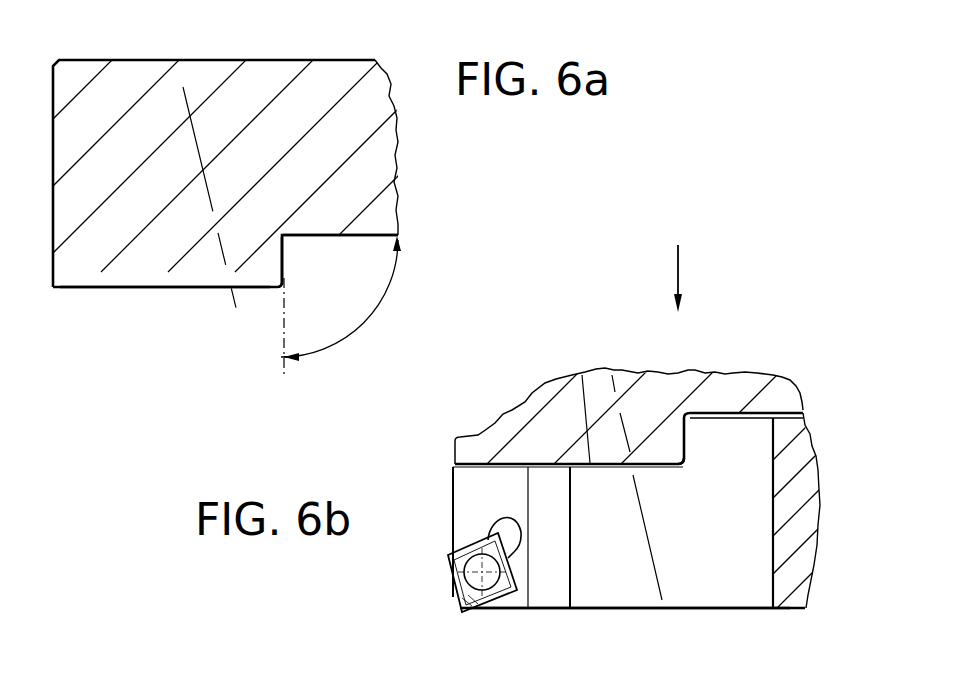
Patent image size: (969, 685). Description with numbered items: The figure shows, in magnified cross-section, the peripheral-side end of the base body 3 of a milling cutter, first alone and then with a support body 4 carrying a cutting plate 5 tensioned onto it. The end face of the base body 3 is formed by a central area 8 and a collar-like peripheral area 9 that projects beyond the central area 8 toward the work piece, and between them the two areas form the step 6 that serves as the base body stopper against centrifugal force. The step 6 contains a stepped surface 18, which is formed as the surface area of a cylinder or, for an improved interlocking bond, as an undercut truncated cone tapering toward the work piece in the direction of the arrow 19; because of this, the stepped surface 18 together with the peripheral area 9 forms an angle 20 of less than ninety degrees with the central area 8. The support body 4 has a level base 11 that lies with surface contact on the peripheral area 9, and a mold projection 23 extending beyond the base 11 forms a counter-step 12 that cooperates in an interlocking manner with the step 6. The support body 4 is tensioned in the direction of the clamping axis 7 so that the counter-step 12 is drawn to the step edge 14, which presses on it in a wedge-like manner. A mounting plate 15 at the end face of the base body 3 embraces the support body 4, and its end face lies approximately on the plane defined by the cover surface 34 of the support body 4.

In FIG. 6a, the base body 3 is at (268, 93).
In FIG. 6b, the base body 3 is at (735, 397).
In FIG. 6b, the support body 4 is at (735, 577).
In FIG. 6b, the cutting plate 5 is at (448, 556).
In FIG. 6a, the step 6 is at (282, 275).
In FIG. 6a, the clamping axis 7 is at (187, 97).
In FIG. 6b, the clamping axis 7 is at (627, 422).
In FIG. 6a, the central area 8 is at (365, 242).
In FIG. 6a, the peripheral area 9 is at (132, 290).
In FIG. 6b, the base 11 is at (582, 374).
In FIG. 6b, the counter-step 12 is at (627, 463).
In FIG. 6a, the step edge 14 is at (282, 278).
In FIG. 6b, the mounting plate 15 is at (805, 517).
In FIG. 6a, the stepped surface 18 is at (285, 253).
In FIG. 6b, the arrow 19 is at (680, 275).
In FIG. 6a, the angle 20 is at (370, 315).
In FIG. 6b, the mold projection 23 is at (733, 458).
In FIG. 6b, the cover surface 34 is at (687, 608).